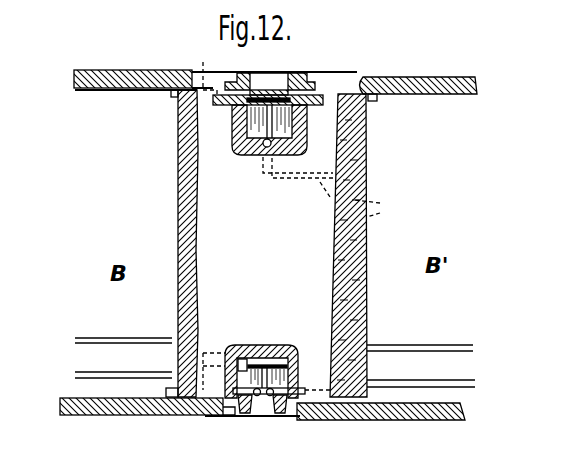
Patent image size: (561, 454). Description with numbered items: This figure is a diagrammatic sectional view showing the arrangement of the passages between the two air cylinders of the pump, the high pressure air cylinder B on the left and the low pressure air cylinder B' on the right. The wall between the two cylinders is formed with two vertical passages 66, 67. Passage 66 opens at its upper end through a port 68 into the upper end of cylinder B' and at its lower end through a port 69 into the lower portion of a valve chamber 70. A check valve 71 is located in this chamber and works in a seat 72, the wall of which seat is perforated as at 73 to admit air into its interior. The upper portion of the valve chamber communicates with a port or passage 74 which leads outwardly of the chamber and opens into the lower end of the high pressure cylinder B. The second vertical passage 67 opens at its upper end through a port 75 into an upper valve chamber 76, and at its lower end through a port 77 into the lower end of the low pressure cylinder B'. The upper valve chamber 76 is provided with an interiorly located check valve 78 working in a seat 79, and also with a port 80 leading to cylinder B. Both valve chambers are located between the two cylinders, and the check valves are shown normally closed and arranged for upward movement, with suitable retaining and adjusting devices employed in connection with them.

The port 80 is at (215, 71).
The check valve 78 is at (290, 86).
The port 68 is at (387, 90).
The seat 79 is at (240, 108).
The upper valve chamber 76 is at (236, 132).
The port 75 is at (250, 148).
The vertical passage 67 is at (379, 210).
The vertical passage 66 is at (368, 240).
The port or passage 74 is at (188, 347).
The seat 72 is at (217, 372).
The check valve 71 is at (253, 353).
The valve chamber 70 is at (243, 396).
The perforations 73 is at (268, 402).
The port 69 is at (290, 407).
The port 77 is at (371, 410).